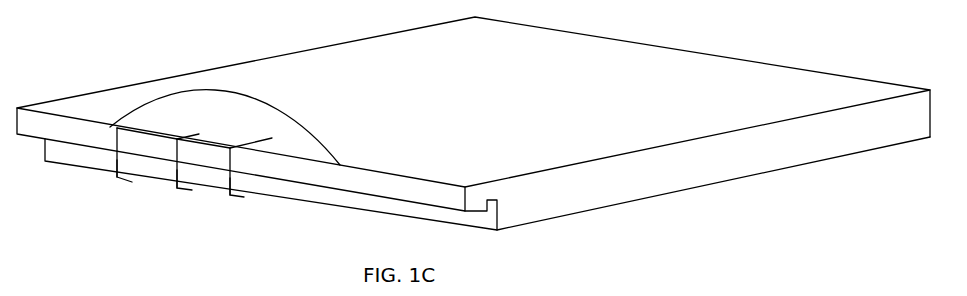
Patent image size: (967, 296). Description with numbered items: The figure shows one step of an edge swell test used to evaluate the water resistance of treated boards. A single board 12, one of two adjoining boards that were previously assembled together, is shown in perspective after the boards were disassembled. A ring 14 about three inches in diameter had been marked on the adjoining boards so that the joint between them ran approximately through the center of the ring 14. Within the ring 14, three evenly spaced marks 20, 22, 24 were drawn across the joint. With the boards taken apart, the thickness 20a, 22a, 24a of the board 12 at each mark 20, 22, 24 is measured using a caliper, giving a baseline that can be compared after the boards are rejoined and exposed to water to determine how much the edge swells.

The adjoining board 12 is at (633, 62).
The ring 14 is at (130, 103).
The mark 20 is at (157, 122).
The thickness 20a is at (117, 153).
The mark 22 is at (205, 128).
The thickness 22a is at (177, 162).
The mark 24 is at (275, 128).
The thickness 24a is at (230, 170).